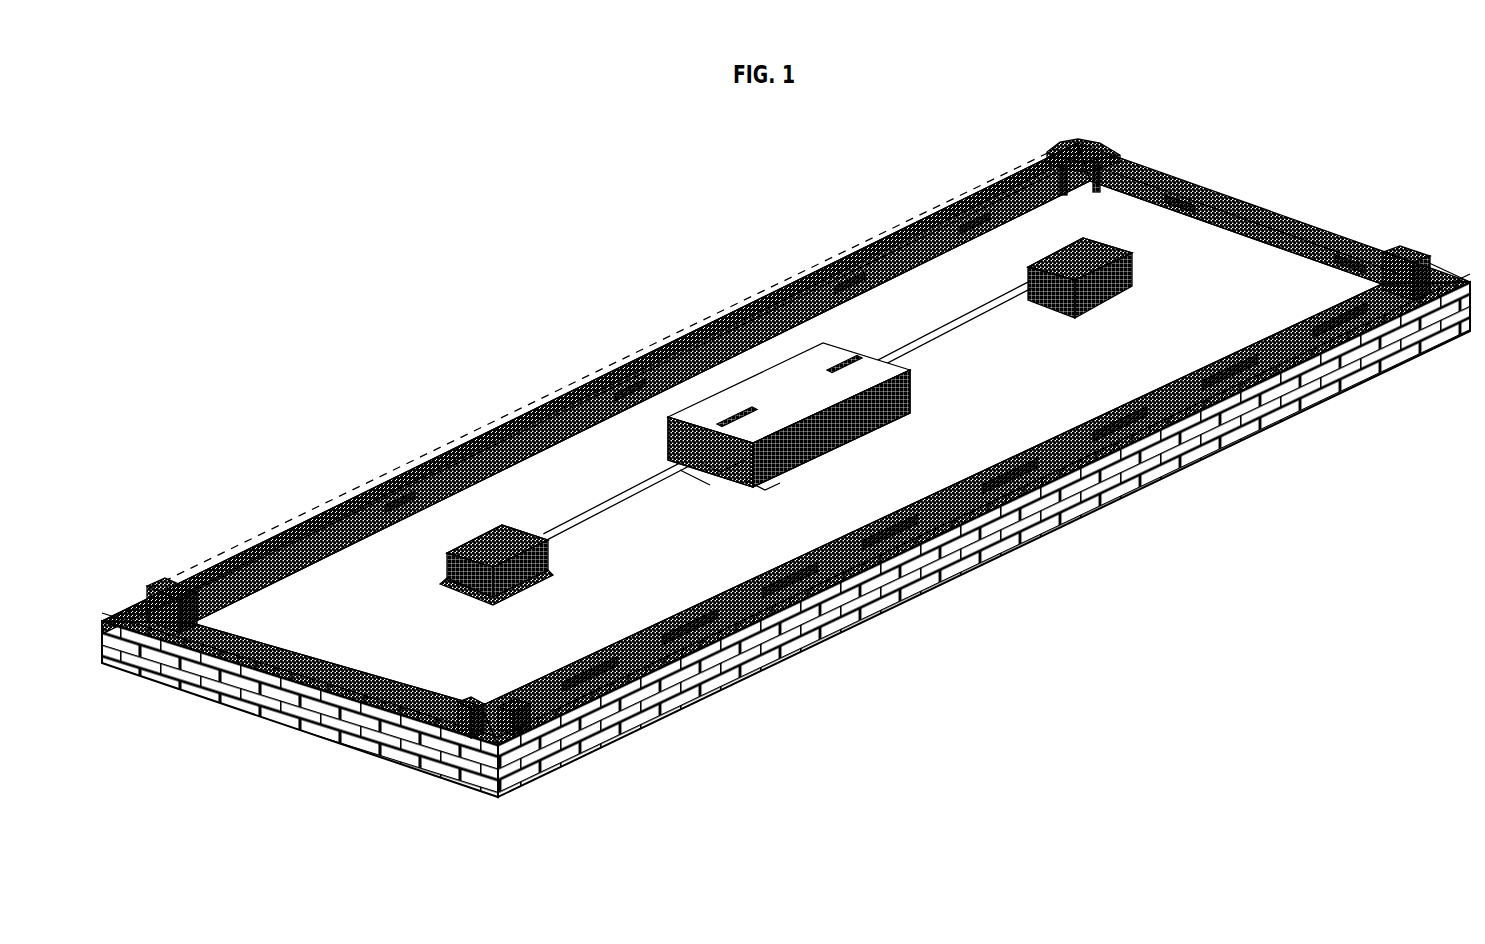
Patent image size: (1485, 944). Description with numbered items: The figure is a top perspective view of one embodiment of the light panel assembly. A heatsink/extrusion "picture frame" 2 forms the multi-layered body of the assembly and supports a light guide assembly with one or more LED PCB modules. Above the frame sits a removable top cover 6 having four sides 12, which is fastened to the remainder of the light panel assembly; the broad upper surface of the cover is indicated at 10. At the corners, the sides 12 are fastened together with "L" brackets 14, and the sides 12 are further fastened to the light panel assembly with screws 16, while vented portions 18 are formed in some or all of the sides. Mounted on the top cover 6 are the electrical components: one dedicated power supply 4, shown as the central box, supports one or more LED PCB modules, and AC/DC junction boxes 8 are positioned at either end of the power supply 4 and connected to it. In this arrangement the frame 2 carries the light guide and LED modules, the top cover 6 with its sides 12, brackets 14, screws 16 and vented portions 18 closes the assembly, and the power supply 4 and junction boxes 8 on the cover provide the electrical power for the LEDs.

The heatsink/extrusion picture frame 2 is at (832, 616).
The dedicated power supply 4 is at (820, 400).
The removable top cover 6 is at (1165, 176).
The AC/DC junction boxes 8 is at (1093, 262).
The panel top surface 10 is at (1213, 292).
The sides 12 is at (368, 686).
The L brackets 14 is at (1048, 150).
The screws 16 is at (592, 381).
The vented portions 18 is at (872, 258).